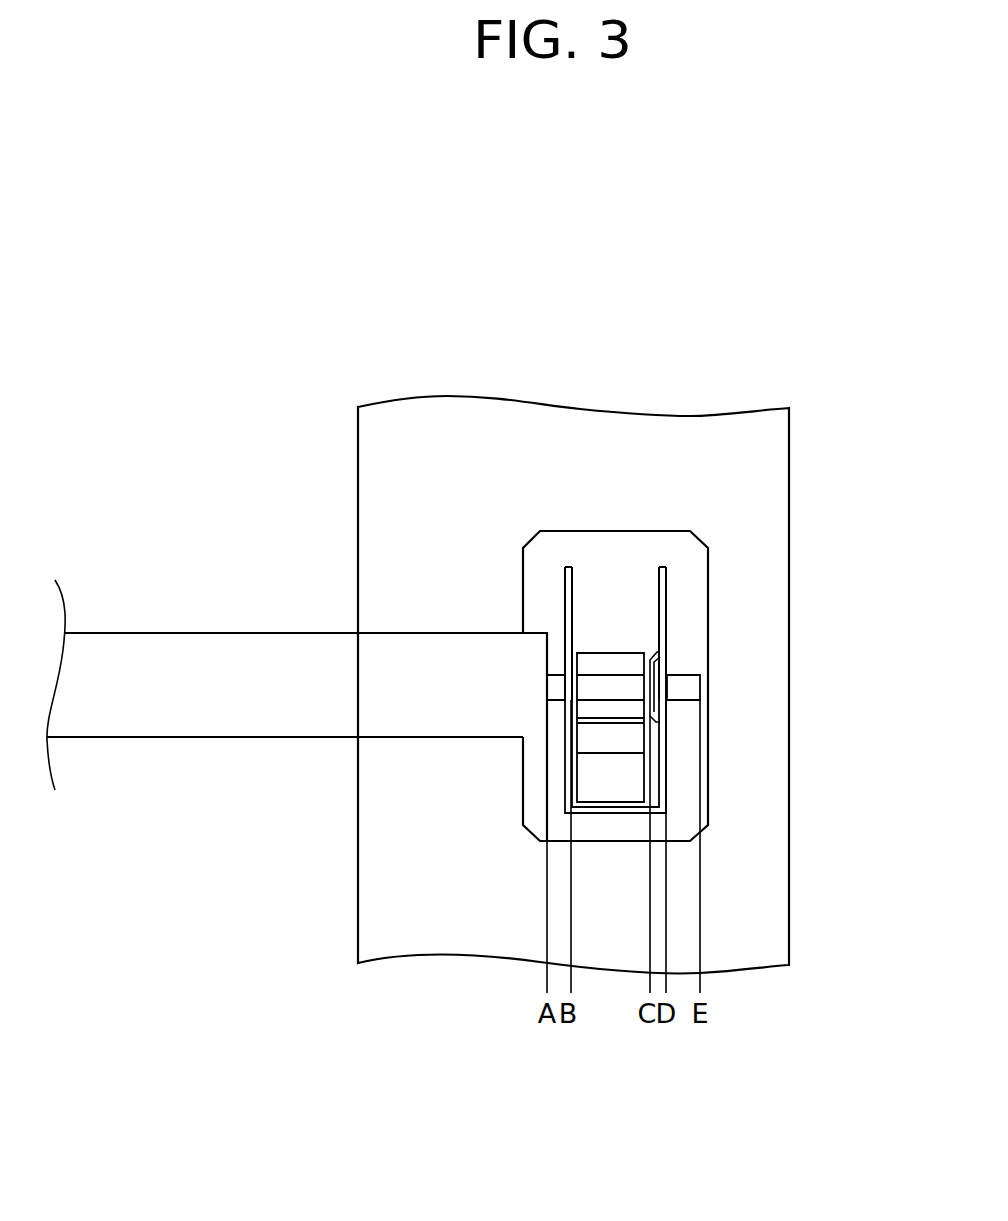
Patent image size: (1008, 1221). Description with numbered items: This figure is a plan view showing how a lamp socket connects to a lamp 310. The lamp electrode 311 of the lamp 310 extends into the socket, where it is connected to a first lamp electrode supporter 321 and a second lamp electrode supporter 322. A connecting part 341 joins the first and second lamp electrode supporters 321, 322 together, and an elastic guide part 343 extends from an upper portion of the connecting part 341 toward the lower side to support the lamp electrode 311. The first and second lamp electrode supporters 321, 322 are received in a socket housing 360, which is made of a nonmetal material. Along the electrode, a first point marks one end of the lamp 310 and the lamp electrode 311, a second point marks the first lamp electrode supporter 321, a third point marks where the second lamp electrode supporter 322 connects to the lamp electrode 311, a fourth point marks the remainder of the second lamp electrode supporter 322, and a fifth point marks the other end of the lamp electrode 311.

The lamp 310 is at (183, 703).
The lamp electrode 311 is at (692, 685).
The first lamp electrode supporter 321 is at (566, 567).
The second lamp electrode supporter 322 is at (660, 567).
The connecting part 341 is at (598, 816).
The elastic guide part 343 is at (635, 773).
The socket housing 360 is at (422, 922).